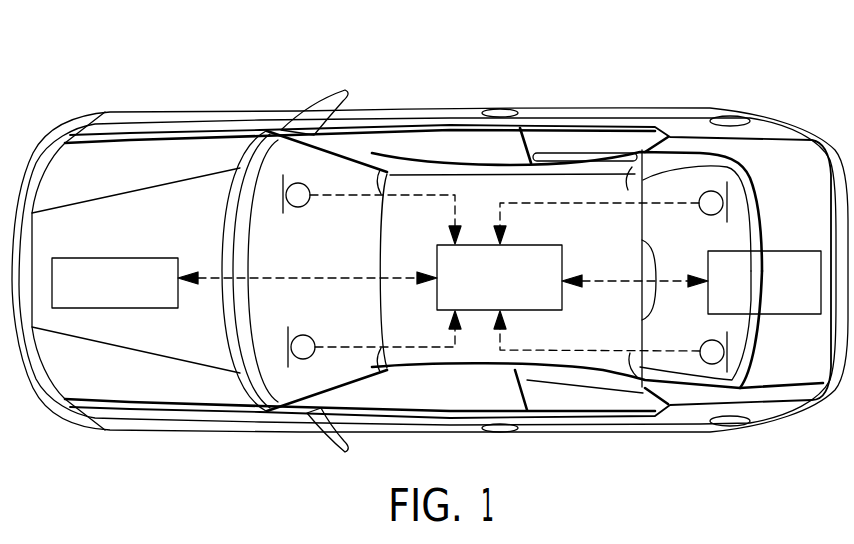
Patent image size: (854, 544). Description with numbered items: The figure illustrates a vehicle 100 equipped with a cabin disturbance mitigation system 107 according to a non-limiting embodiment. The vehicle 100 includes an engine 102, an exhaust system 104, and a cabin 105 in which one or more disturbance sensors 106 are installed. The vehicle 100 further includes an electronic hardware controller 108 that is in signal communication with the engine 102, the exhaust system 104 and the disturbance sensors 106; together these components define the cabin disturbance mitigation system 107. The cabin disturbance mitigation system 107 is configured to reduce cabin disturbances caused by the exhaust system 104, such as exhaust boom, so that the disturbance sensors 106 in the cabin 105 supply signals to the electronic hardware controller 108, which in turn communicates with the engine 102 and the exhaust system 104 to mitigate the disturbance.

The vehicle 100 is at (92, 91).
The engine 102 is at (120, 258).
The exhaust system 104 is at (792, 251).
The cabin 105 is at (252, 258).
The disturbance sensors 106 is at (304, 206).
The cabin disturbance mitigation system 107 is at (474, 192).
The electronic hardware controller 108 is at (562, 254).